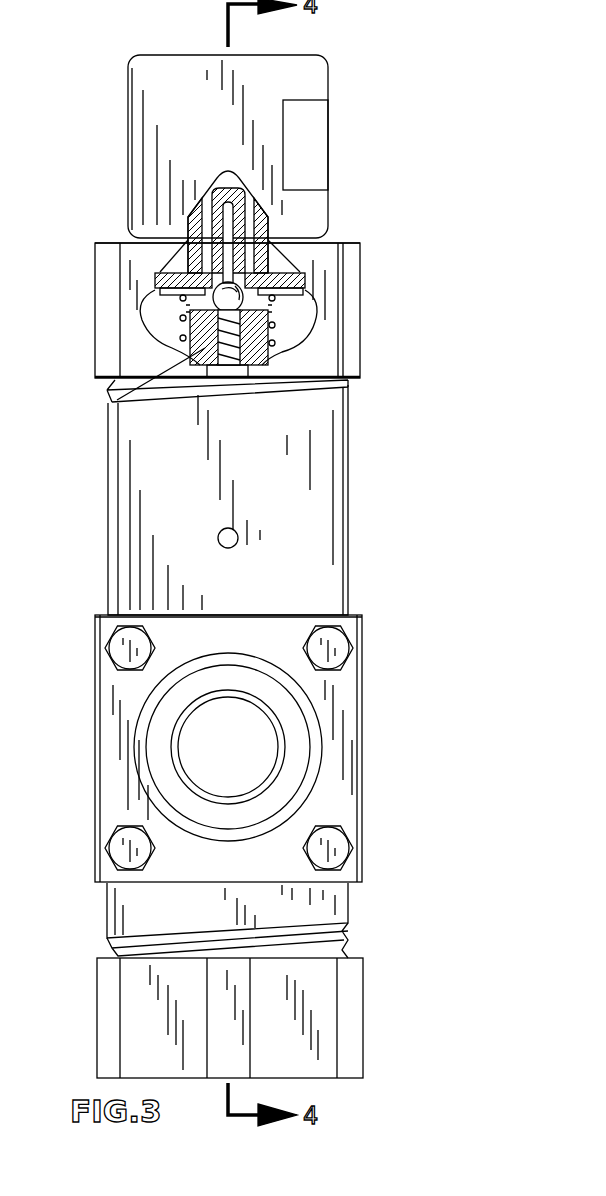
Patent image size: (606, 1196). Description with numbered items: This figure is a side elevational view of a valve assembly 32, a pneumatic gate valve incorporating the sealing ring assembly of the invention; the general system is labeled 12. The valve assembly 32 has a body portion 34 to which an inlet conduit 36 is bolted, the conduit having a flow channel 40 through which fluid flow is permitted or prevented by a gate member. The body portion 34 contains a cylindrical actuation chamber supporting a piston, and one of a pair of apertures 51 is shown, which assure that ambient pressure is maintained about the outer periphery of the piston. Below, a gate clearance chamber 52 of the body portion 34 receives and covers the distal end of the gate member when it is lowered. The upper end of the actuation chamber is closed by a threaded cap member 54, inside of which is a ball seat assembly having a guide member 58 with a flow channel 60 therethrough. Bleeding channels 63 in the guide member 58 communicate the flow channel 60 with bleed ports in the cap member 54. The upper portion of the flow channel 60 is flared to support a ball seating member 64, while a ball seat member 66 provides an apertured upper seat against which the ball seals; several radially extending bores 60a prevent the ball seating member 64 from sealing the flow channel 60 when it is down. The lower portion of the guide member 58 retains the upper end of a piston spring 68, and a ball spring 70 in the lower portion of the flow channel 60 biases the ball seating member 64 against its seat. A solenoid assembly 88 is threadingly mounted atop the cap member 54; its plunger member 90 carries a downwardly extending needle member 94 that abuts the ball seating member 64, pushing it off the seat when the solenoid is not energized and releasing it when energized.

The fluid dispensing system 12 is at (0, 123).
The valve assembly 32 is at (106, 511).
The body portion 34 is at (313, 520).
The inlet conduit 36 is at (310, 697).
The flow channel 40 is at (235, 751).
The apertures 51 is at (236, 546).
The gate clearance chamber 52 is at (138, 905).
The cap member 54 is at (93, 285).
The guide member 58 is at (117, 400).
The flow channel 60 is at (233, 350).
The radially extending bores 60a is at (300, 322).
The bleeding channels 63 is at (165, 270).
The ball seating member 64 is at (190, 305).
The ball seat member 66 is at (297, 268).
The piston spring 68 is at (200, 343).
The ball spring 70 is at (265, 368).
The solenoid assembly 88 is at (308, 85).
The plunger member 90 is at (207, 203).
The needle member 94 is at (228, 225).